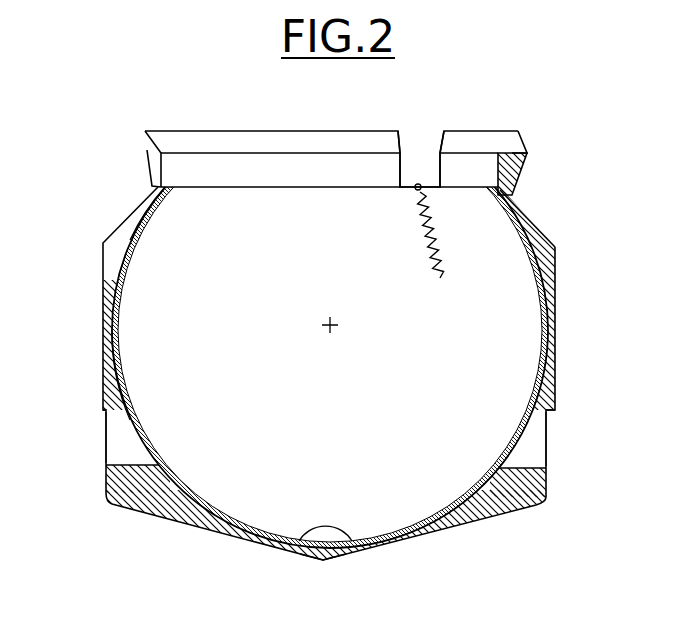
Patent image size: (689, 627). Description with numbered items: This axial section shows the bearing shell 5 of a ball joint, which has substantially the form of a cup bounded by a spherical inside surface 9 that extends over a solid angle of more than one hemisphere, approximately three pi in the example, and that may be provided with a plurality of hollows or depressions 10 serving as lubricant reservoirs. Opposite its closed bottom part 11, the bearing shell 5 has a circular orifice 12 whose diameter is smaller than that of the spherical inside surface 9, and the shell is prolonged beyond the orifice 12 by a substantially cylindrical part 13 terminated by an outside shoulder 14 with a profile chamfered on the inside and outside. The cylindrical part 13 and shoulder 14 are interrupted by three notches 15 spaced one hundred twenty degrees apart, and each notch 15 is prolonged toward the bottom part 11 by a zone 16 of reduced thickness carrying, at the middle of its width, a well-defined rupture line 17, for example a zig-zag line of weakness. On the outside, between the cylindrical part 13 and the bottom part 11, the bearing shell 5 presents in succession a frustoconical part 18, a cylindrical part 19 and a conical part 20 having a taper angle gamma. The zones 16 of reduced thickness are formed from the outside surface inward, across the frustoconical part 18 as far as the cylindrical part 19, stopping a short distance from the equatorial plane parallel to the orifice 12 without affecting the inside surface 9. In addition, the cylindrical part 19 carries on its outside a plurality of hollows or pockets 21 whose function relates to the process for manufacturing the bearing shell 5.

The bearing shell 5 is at (550, 371).
The spherical inside surface 9 is at (130, 366).
The hollows or depressions 10 is at (135, 433).
The closed bottom part 11 is at (307, 553).
The circular orifice 12 is at (250, 172).
The substantially cylindrical part 13 is at (510, 170).
The outside shoulder 14 is at (527, 148).
The notches 15 is at (147, 150).
The zone of reduced thickness 16 is at (140, 208).
The rupture line 17 is at (447, 248).
The frustoconical part 18 is at (542, 226).
The cylindrical part 19 is at (555, 325).
The conical part 20 is at (497, 515).
The hollows or pockets 21 is at (125, 447).